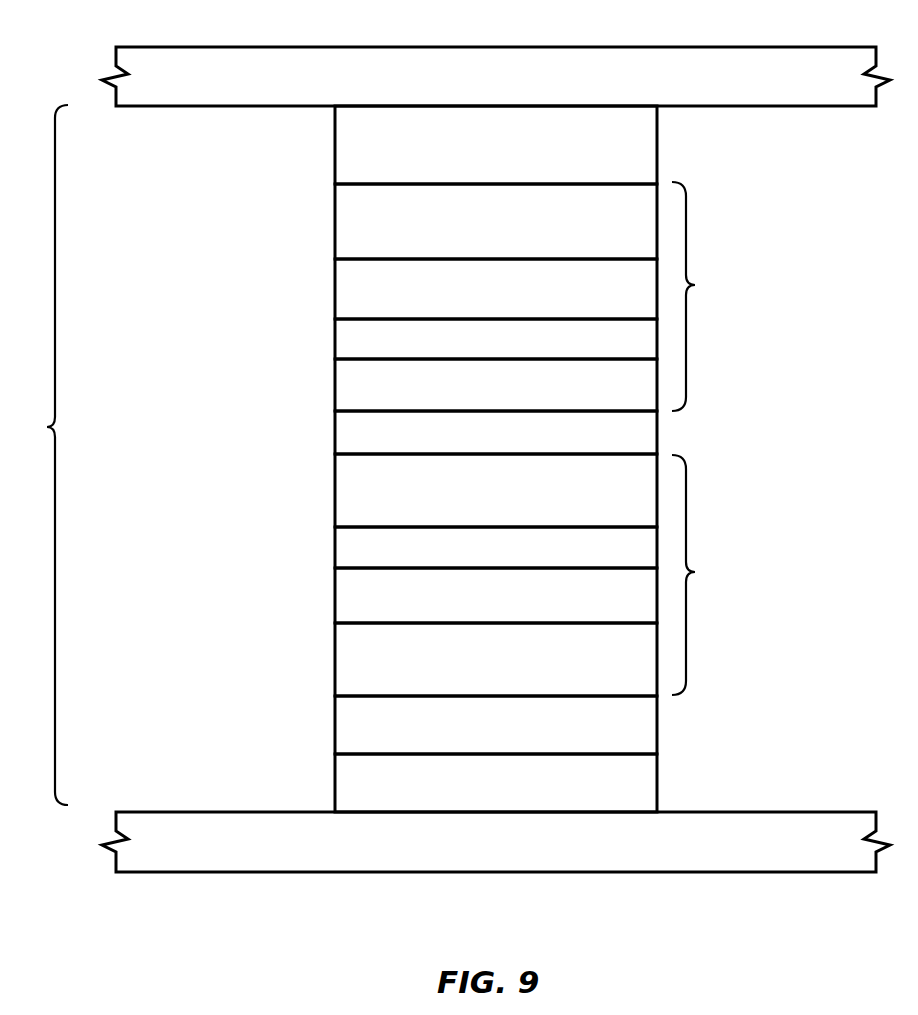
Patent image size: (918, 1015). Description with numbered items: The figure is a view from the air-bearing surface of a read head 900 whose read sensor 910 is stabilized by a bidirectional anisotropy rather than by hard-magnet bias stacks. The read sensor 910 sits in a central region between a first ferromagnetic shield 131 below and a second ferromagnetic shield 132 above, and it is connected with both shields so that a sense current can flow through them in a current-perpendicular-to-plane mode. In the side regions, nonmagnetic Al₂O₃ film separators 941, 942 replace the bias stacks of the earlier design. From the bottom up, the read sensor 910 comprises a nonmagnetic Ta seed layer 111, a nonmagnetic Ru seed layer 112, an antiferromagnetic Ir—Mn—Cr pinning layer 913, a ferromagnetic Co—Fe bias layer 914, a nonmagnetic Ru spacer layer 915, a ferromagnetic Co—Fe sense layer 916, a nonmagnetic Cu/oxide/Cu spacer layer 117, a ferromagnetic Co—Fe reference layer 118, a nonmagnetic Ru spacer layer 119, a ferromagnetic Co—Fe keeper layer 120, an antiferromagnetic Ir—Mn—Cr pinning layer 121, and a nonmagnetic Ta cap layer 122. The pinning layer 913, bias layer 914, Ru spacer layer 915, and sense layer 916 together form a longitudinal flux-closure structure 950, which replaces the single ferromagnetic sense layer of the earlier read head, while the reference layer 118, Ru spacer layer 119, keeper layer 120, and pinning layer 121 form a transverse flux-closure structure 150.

The read head 900 is at (185, 927).
The read sensor 910 is at (35, 455).
The first ferromagnetic shield 131 is at (661, 859).
The second ferromagnetic shield 132 is at (661, 92).
The Ta seed layer 111 is at (616, 791).
The Ru seed layer 112 is at (616, 736).
The Ir—Mn—Cr pinning layer 913 is at (616, 669).
The Co—Fe bias layer 914 is at (616, 607).
The Ru spacer layer 915 is at (616, 559).
The Co—Fe sense layer 916 is at (616, 499).
The spacer layer 117 is at (616, 444).
The Co—Fe reference layer 118 is at (616, 399).
The Ru spacer layer 119 is at (616, 349).
The Co—Fe keeper layer 120 is at (616, 302).
The Ir—Mn—Cr pinning layer 121 is at (616, 237).
The Ta cap layer 122 is at (616, 160).
The transverse flux-closure structure 150 is at (780, 334).
The longitudinal flux-closure structure 950 is at (780, 619).
The separator 941 is at (230, 749).
The separator 942 is at (822, 751).